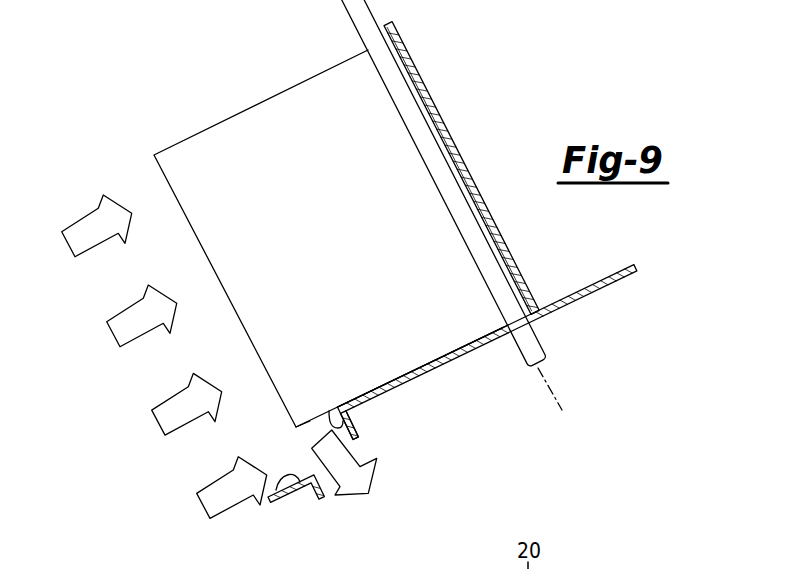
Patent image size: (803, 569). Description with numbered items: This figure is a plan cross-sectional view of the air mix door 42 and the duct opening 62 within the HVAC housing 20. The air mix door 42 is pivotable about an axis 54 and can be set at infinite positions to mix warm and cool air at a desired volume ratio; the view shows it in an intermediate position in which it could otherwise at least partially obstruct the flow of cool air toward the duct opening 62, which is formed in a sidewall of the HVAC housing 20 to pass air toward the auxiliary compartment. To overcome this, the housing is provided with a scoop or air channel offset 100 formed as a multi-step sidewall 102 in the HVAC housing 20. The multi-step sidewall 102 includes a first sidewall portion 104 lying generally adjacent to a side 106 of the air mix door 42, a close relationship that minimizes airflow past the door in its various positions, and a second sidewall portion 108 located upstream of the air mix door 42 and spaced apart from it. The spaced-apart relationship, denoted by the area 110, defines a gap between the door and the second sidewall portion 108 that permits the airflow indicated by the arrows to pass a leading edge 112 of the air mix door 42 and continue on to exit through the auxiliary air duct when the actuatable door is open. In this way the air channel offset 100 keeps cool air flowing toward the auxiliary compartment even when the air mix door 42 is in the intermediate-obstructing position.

The HVAC housing 20 is at (598, 294).
The air mix door 42 is at (250, 106).
The axis 54 is at (550, 390).
The duct opening 62 is at (329, 411).
The air channel offset 100 is at (220, 458).
The multi-step sidewall 102 is at (333, 493).
The first sidewall portion 104 is at (386, 384).
The side 106 is at (310, 421).
The second sidewall portion 108 is at (268, 497).
The area 110 is at (257, 440).
The leading edge 112 is at (203, 252).